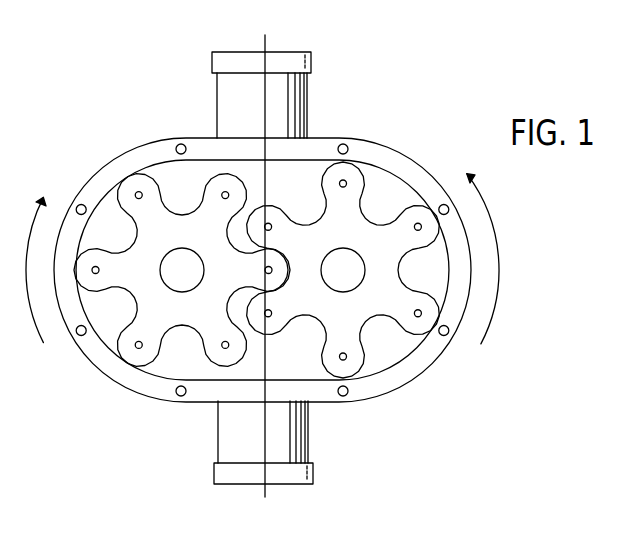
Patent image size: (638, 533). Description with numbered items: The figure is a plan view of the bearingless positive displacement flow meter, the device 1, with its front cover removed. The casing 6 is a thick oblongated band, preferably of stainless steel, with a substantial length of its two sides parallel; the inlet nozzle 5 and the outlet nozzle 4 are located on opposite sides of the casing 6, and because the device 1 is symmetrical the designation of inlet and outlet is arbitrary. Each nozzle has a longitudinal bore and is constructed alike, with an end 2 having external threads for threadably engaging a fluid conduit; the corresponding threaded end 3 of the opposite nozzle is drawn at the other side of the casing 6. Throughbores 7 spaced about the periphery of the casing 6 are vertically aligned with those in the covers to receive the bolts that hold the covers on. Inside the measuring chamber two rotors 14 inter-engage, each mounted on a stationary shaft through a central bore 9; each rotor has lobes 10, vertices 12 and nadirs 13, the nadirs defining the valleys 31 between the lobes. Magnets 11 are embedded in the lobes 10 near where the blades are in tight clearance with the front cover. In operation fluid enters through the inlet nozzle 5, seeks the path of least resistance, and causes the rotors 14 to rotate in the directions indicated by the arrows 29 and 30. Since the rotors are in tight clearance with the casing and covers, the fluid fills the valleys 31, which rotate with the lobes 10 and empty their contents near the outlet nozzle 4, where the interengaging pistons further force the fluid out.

The device 1 is at (106, 153).
The end 2 is at (281, 52).
The outlet flange 3 is at (290, 484).
The outlet nozzle 4 is at (305, 120).
The inlet nozzle 5 is at (303, 440).
The casing 6 is at (416, 162).
The throughbores 7 is at (437, 205).
The rotor shaft bore 9 is at (340, 266).
The lobes 10 is at (104, 258).
The magnets 11 is at (100, 268).
The vertices 12 is at (246, 352).
The nadirs 13 is at (138, 300).
The rotors 14 is at (207, 293).
The arrows 29 is at (375, 267).
The arrows 30 is at (43, 284).
The valleys 31 is at (390, 345).